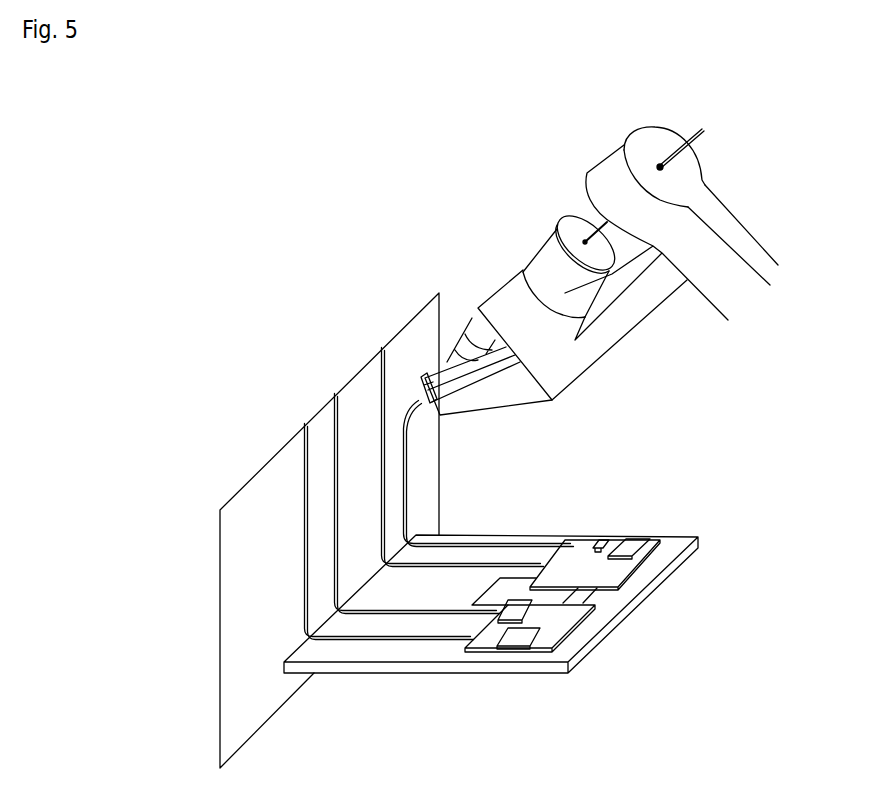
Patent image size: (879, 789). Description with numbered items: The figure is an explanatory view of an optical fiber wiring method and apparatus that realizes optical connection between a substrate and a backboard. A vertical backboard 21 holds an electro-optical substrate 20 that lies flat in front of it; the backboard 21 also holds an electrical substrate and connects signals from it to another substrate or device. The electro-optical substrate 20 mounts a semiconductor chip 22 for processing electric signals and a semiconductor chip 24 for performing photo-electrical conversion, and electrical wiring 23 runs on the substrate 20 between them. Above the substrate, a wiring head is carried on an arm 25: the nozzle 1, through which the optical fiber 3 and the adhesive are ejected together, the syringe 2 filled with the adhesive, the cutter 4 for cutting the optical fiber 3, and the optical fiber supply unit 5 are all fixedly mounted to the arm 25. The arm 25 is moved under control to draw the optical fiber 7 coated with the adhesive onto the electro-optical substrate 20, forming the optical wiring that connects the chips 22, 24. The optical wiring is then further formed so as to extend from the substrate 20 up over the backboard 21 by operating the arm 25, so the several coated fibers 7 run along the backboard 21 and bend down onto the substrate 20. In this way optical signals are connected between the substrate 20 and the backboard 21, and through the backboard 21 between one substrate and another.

The nozzle 1 is at (444, 364).
The syringe 2 is at (537, 267).
The optical fiber 3 is at (686, 136).
The cutter 4 is at (516, 358).
The optical fiber supply unit 5 is at (605, 167).
The optical fiber coated with the adhesive 7 is at (410, 451).
The electro-optical substrate 20 is at (680, 537).
The backboard 21 is at (228, 628).
The semiconductor chip 22 is at (620, 567).
The electrical wiring 23 is at (620, 598).
The semiconductor chip 24 is at (590, 540).
The arm 25 is at (726, 221).